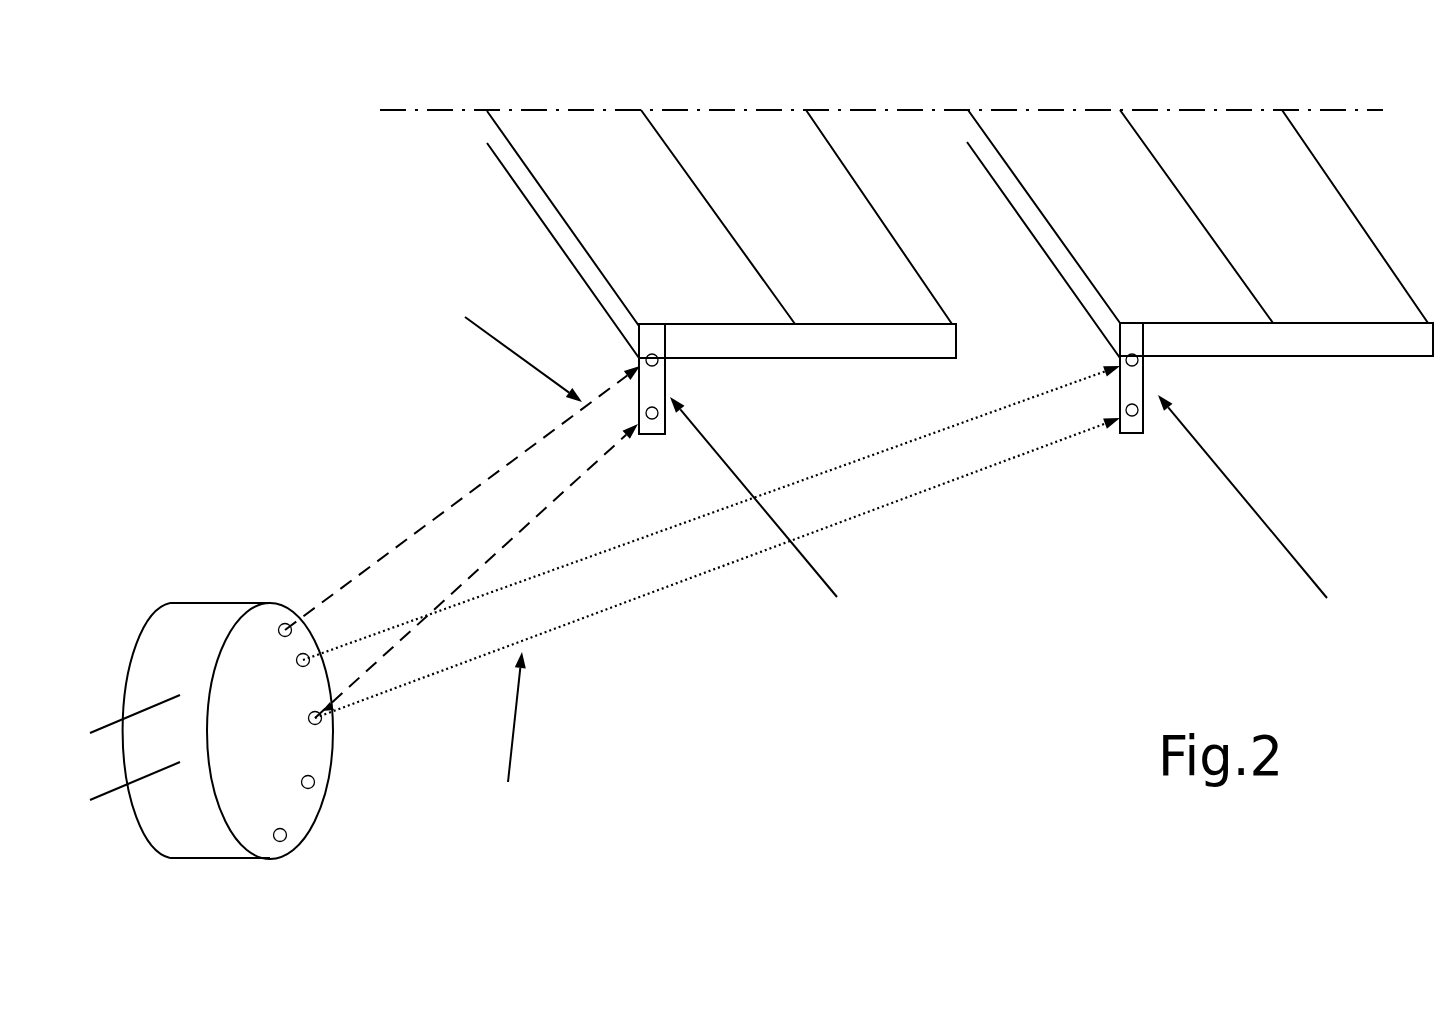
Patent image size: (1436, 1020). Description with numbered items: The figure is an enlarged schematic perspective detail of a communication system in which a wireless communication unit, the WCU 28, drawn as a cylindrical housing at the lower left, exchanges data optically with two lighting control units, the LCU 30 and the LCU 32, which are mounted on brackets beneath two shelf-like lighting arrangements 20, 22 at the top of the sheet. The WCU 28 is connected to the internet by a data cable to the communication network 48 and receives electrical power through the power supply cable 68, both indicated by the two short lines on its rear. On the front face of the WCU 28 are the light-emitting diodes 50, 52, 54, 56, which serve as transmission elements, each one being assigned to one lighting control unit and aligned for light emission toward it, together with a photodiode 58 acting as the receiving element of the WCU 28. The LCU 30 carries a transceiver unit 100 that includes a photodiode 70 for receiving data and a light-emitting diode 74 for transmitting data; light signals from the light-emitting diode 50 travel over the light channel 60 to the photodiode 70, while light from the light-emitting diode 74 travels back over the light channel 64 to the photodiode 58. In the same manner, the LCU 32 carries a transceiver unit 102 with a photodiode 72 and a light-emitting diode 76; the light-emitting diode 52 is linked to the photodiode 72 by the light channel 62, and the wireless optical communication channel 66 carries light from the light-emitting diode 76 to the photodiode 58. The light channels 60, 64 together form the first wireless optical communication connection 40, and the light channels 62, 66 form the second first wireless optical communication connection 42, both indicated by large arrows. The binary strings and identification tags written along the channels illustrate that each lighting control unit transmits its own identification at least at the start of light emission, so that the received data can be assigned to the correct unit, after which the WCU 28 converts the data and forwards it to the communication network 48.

The first shelf 20 is at (573, 167).
The second shelf 22 is at (1048, 158).
The WCU 28 is at (203, 628).
The LCU 30 is at (654, 384).
The LCU 32 is at (1140, 373).
The first wireless optical communication connection 40 is at (504, 346).
The first wireless optical communication connection 42 is at (507, 732).
The communication network 48 is at (108, 730).
The light-emitting diode 50 is at (285, 623).
The light-emitting diode 52 is at (305, 653).
The light-emitting diode 54 is at (315, 782).
The light-emitting diode 56 is at (287, 835).
The photodiode 58 is at (322, 720).
The light channel 60 is at (350, 578).
The light channel 62 is at (818, 477).
The light channel 64 is at (448, 600).
The wireless optical communication channel 66 is at (612, 607).
The power supply cable 68 is at (118, 790).
The photodiode 70 is at (652, 354).
The photodiode 72 is at (1132, 354).
The light-emitting diode 74 is at (649, 420).
The light-emitting diode 76 is at (1130, 417).
The transceiver unit 100 is at (770, 515).
The transceiver unit 102 is at (1259, 514).